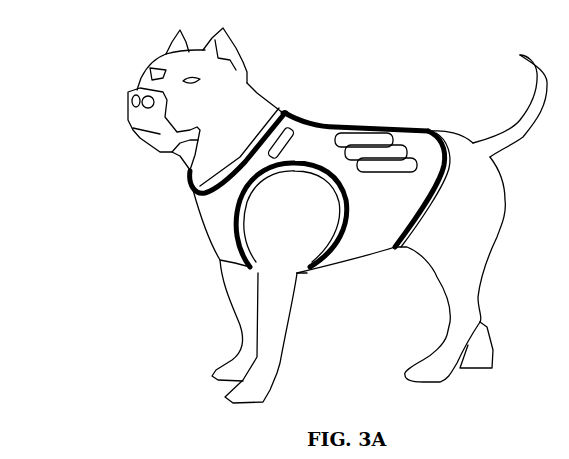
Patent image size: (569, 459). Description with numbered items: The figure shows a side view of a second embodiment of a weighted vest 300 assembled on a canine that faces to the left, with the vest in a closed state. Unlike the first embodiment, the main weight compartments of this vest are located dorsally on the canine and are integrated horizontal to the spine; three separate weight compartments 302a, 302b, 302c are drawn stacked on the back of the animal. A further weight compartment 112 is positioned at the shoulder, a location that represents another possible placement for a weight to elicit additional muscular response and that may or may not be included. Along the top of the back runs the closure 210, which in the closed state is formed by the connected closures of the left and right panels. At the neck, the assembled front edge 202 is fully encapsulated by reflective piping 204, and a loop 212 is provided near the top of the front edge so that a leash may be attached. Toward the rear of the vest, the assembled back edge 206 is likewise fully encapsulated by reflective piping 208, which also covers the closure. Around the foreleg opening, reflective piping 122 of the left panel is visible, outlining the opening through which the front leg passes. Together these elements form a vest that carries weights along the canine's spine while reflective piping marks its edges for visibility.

The weighted vest 300 is at (310, 170).
The front edge 202 is at (188, 182).
The reflective piping 204 is at (201, 190).
The loop 212 is at (287, 110).
The weight compartment 112 is at (291, 128).
The closure 210 is at (361, 125).
The back edge 206 is at (441, 196).
The weight compartment 302a is at (376, 136).
The weight compartment 302b is at (391, 146).
The weight compartment 302c is at (399, 163).
The reflective piping 122 is at (323, 266).
The reflective piping 208 is at (393, 249).